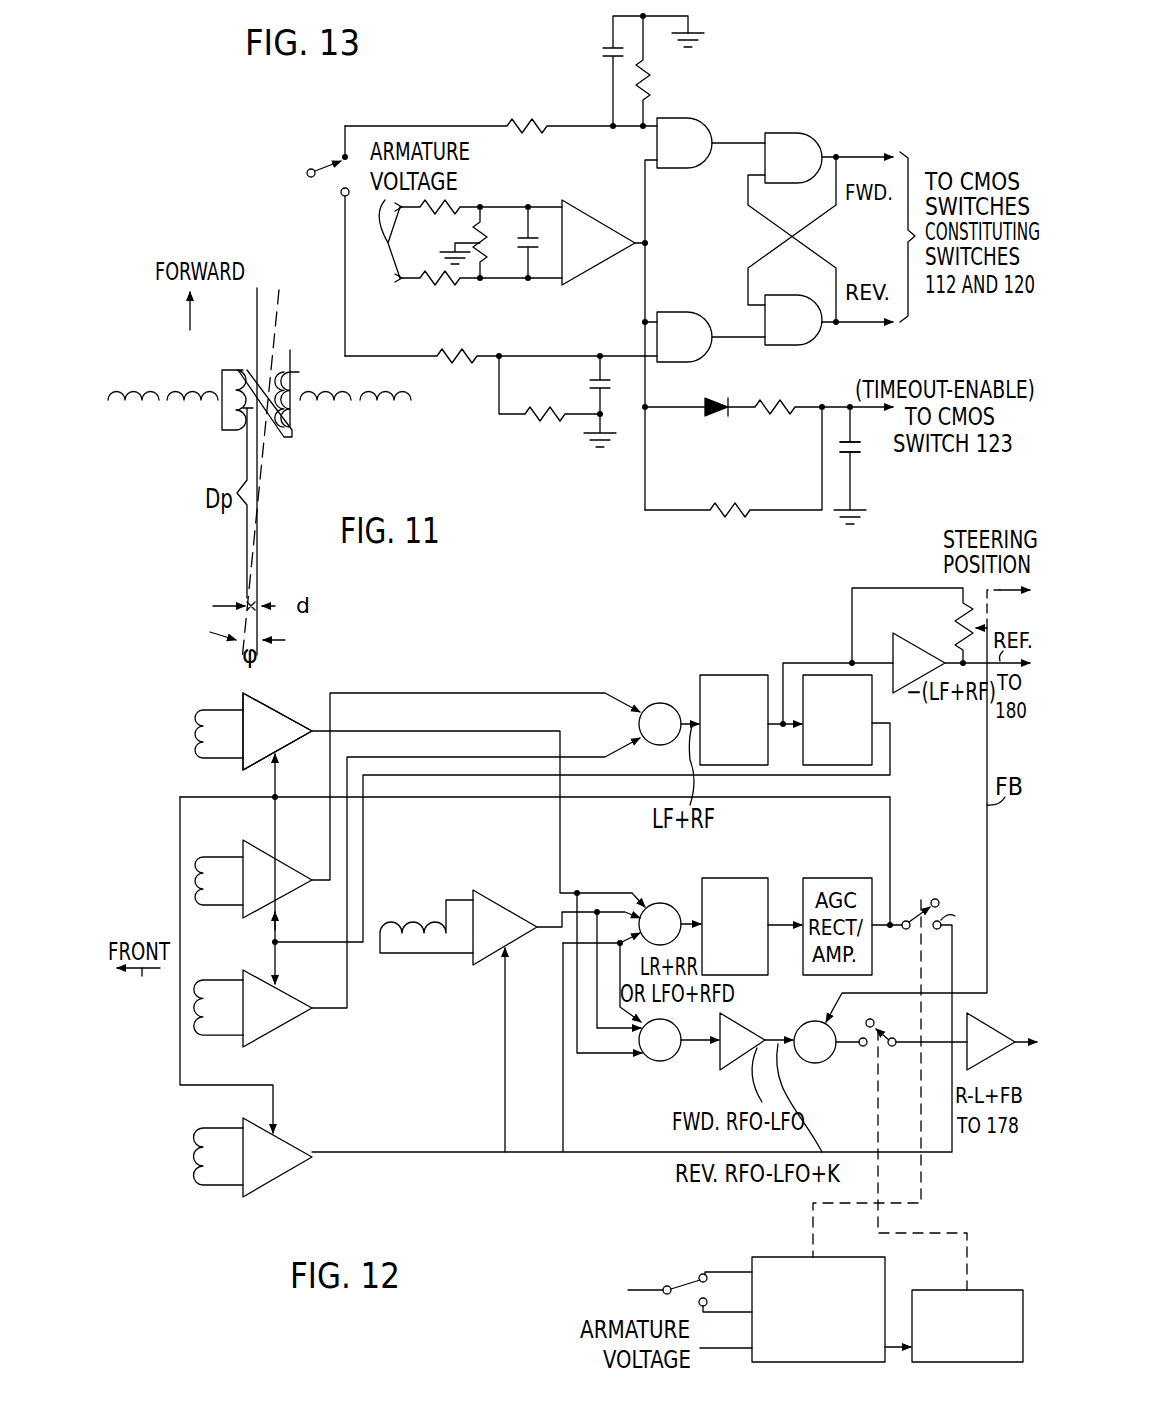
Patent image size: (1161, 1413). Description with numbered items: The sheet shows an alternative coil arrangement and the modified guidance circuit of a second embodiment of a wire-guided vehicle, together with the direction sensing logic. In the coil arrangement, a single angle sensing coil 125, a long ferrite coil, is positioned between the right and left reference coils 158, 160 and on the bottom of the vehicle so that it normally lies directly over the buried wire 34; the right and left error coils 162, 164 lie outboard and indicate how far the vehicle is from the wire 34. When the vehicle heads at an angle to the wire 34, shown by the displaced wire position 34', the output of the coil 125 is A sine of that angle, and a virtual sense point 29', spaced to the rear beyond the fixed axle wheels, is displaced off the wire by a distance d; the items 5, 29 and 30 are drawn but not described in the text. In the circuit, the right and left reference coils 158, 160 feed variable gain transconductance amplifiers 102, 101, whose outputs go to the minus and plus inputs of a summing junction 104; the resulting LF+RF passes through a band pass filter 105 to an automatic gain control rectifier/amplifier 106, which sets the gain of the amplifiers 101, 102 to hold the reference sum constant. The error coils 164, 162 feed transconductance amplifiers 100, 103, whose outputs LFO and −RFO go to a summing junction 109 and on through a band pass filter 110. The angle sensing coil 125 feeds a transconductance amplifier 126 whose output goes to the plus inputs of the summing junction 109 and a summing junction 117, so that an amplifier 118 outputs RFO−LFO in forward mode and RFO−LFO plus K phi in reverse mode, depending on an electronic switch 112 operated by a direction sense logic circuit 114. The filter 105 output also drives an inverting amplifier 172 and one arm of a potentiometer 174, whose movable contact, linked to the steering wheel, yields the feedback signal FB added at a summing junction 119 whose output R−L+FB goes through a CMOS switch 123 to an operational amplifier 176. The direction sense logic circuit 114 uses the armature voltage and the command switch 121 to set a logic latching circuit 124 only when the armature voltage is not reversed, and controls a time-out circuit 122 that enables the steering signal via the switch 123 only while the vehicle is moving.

In FIG. 11, the vehicle 5 is at (189, 320).
In FIG. 11, the wire 29 is at (264, 575).
In FIG. 11, the virtual sense point 29' is at (224, 624).
In FIG. 12, the sensor 30 is at (199, 698).
In FIG. 11, the buried wire 34 is at (240, 471).
In FIG. 11, the pointer deflected position 34' is at (287, 475).
In FIG. 12, the transconductance amplifier 100 is at (258, 700).
In FIG. 12, the variable gain transconductance amplifier 101 is at (258, 845).
In FIG. 12, the variable gain transconductance amplifier 102 is at (279, 992).
In FIG. 12, the transconductance amplifier 103 is at (280, 1138).
In FIG. 12, the summing junction 104 is at (676, 701).
In FIG. 12, the band pass filter 105 is at (739, 674).
In FIG. 12, the automatic gain control rectifier/amplifier 106 is at (832, 674).
In FIG. 12, the summing junction 109 is at (666, 904).
In FIG. 12, the band pass filter 110 is at (736, 878).
In FIG. 12, the electronic switch 112 is at (912, 930).
In FIG. 13, the direction sense logic circuit 114 is at (532, 48).
In FIG. 12, the direction sense logic circuit 114 is at (794, 1255).
In FIG. 12, the summing junction 117 is at (651, 1062).
In FIG. 12, the amplifier 118 is at (733, 1058).
In FIG. 12, the summing junction 119 is at (831, 1062).
In FIG. 13, the control switch 121 is at (338, 150).
In FIG. 12, the control switch 121 is at (684, 1285).
In FIG. 13, the time-out circuit 122 is at (864, 468).
In FIG. 12, the time-out circuit 122 is at (1020, 1289).
In FIG. 12, the CMOS switch 123 is at (888, 1050).
In FIG. 13, the logic latching circuit 124 is at (841, 134).
In FIG. 11, the angle sensing coil 125 is at (292, 377).
In FIG. 12, the angle sensing coil 125 is at (413, 925).
In FIG. 12, the transconductance amplifier 126 is at (516, 913).
In FIG. 11, the right reference coil 158 is at (330, 400).
In FIG. 12, the right reference coil 158 is at (228, 978).
In FIG. 11, the left reference coil 160 is at (210, 400).
In FIG. 12, the left reference coil 160 is at (203, 862).
In FIG. 11, the right error coil 162 is at (405, 400).
In FIG. 12, the right error coil 162 is at (212, 1187).
In FIG. 11, the left error coil 164 is at (128, 400).
In FIG. 12, the left error coil 164 is at (193, 752).
In FIG. 12, the inverting amplifier 172 is at (893, 646).
In FIG. 12, the potentiometer 174 is at (958, 628).
In FIG. 12, the operational amplifier 176 is at (1000, 1030).